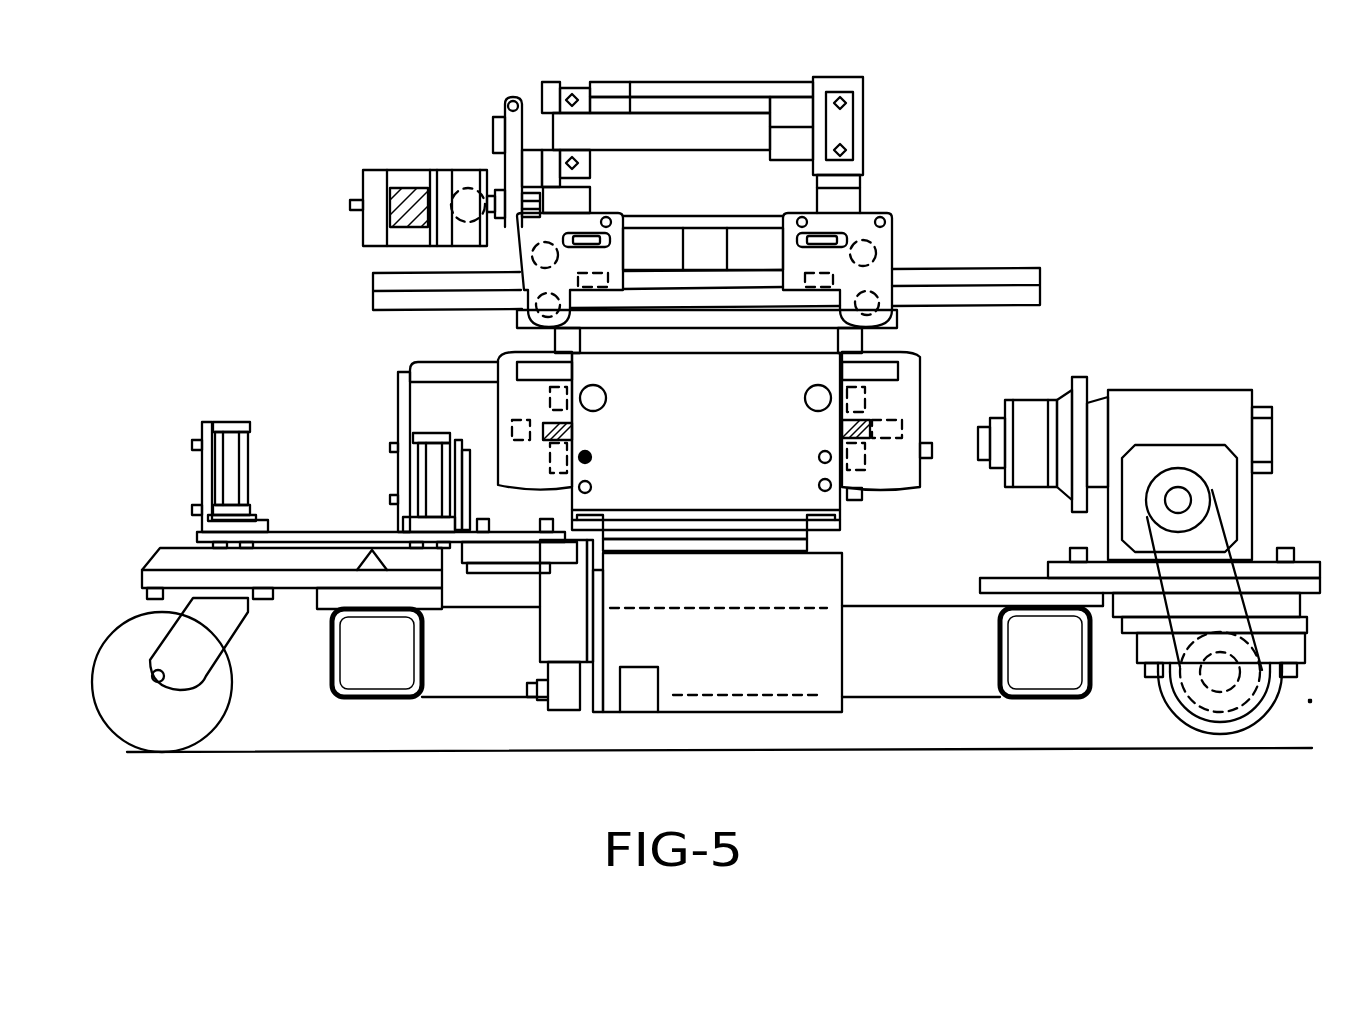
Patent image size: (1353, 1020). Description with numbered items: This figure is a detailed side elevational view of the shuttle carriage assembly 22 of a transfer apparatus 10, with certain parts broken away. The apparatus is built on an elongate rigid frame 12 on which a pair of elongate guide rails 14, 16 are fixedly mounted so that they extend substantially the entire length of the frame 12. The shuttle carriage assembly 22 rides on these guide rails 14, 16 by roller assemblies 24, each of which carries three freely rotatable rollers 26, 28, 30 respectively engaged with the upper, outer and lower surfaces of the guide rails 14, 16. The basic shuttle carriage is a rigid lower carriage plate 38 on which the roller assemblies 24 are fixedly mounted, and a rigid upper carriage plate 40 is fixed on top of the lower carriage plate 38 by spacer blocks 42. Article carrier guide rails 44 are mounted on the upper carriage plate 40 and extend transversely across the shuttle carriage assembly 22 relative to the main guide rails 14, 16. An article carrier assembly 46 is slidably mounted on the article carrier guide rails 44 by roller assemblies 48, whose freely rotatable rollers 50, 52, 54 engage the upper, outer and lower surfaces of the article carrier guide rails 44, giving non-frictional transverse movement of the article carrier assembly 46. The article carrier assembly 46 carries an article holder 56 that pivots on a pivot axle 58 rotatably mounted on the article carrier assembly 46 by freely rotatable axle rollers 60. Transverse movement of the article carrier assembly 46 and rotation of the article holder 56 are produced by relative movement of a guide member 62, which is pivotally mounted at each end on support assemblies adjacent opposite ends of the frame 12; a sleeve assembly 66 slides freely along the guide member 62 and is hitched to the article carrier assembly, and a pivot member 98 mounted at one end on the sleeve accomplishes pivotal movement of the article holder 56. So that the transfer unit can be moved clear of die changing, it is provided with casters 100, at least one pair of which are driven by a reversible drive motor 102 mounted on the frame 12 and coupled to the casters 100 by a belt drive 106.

The transfer apparatus 10 is at (1216, 112).
The frame 12 is at (344, 700).
The guide rail 14 is at (840, 432).
The guide rail 16 is at (572, 430).
The shuttle carriage assembly 22 is at (925, 140).
The roller assembly 24 is at (901, 490).
The roller 26 is at (458, 405).
The roller 28 is at (513, 430).
The roller 30 is at (589, 462).
The lower carriage plate 38 is at (640, 318).
The upper carriage plate 40 is at (753, 223).
The spacer block 42 is at (695, 247).
The article carrier guide rail 44 is at (1040, 288).
The article carrier assembly 46 is at (542, 91).
The roller assembly 48 is at (616, 210).
The roller 50 is at (877, 250).
The roller 52 is at (807, 290).
The roller 54 is at (880, 292).
The article holder 56 is at (727, 80).
The pivot axle 58 is at (643, 127).
The axle roller 60 is at (560, 95).
The guide member 62 is at (392, 192).
The sleeve assembly 66 is at (404, 170).
The pivot member 98 is at (513, 175).
The caster 100 is at (231, 720).
The reversible drive motor 102 is at (1140, 390).
The belt drive 106 is at (1227, 528).